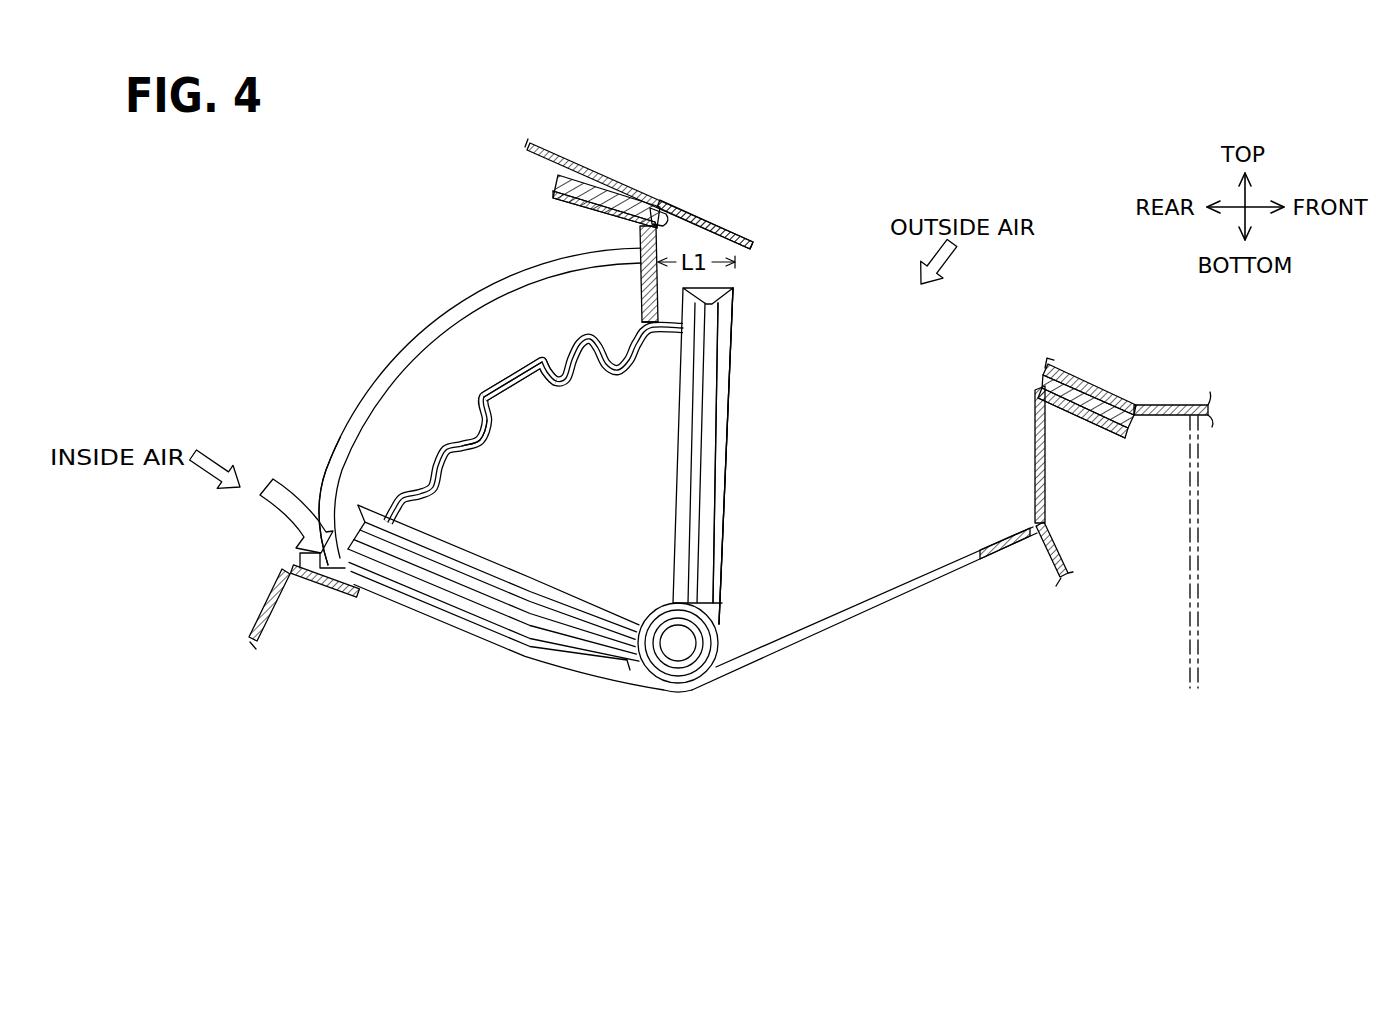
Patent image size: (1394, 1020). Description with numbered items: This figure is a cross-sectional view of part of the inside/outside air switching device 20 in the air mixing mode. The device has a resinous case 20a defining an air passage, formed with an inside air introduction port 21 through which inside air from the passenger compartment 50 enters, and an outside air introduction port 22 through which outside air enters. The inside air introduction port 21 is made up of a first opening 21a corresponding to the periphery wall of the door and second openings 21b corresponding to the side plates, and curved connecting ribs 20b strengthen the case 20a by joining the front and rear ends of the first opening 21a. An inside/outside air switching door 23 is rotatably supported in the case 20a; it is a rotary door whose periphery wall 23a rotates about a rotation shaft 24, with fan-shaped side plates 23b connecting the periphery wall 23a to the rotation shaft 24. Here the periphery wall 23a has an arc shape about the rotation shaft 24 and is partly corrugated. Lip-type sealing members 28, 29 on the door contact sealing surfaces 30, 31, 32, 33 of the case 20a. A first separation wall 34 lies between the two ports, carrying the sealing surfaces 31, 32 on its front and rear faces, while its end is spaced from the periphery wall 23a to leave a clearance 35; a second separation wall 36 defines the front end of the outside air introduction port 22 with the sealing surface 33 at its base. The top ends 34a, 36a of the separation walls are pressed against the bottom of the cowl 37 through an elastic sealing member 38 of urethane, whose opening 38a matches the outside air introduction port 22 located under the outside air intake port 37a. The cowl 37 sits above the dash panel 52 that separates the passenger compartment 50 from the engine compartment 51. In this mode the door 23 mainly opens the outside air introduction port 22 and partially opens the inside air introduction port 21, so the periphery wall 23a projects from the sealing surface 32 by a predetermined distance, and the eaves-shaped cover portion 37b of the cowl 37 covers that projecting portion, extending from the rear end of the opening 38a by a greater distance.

The inside/outside air switching device 20 is at (240, 622).
The resinous case 20a is at (287, 577).
The curved connecting ribs 20b is at (473, 303).
The inside air introduction port 21 is at (282, 367).
The first opening 21a is at (330, 437).
The second openings 21b is at (316, 525).
The outside air introduction port 22 is at (837, 332).
The inside/outside air switching door 23 is at (482, 438).
The periphery wall 23a is at (464, 404).
The side plates 23b is at (490, 503).
The rotation shaft 24 is at (681, 650).
The sealing member 28 is at (417, 577).
The sealing member 29 is at (717, 538).
The sealing surface 30 is at (340, 572).
The sealing surface 31 is at (640, 312).
The sealing surface 32 is at (655, 290).
The sealing surface 33 is at (993, 541).
The first separation wall 34 is at (655, 242).
The top end of first separation wall 34a is at (580, 212).
The clearance 35 is at (645, 322).
The second separation wall 36 is at (1046, 483).
The top end of second separation wall 36a is at (1103, 437).
The cowl 37 is at (617, 190).
The outside air intake port 37a is at (1043, 366).
The cover portion 37b is at (762, 222).
The elastic sealing member 38 is at (580, 166).
The opening 38a is at (660, 210).
The passenger compartment 50 is at (1102, 627).
The engine compartment 51 is at (1260, 628).
The dash panel 52 is at (1189, 641).